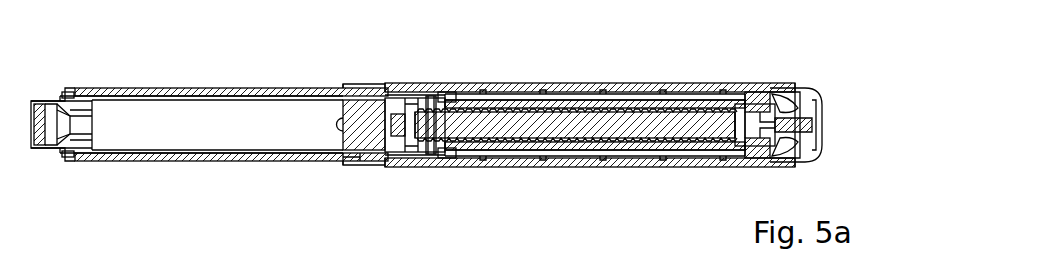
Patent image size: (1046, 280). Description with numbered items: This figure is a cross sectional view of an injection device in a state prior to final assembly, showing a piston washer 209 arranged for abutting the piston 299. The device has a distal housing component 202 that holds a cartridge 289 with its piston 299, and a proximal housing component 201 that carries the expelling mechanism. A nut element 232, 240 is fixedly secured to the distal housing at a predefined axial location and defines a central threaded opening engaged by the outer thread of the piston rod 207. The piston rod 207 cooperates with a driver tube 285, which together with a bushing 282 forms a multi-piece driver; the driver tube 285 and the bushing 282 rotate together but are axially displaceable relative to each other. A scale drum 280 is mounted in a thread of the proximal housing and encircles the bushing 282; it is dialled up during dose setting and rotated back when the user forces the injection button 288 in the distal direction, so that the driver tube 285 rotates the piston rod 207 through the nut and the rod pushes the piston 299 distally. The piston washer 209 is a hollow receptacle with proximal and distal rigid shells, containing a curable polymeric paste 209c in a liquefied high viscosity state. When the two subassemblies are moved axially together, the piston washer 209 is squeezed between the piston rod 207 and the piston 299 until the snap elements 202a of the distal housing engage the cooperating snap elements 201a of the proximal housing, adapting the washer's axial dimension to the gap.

The proximal housing component 201 is at (607, 160).
The snap elements of the proximal housing component 201a is at (357, 161).
The distal housing component 202 is at (130, 158).
The snap elements of the distal housing component 202a is at (347, 160).
The piston rod 207 is at (510, 140).
The piston washer 209 is at (412, 147).
The curable polymeric paste 209c is at (398, 136).
The nut element 232 is at (500, 100).
The nut element 240 is at (431, 96).
The scale drum 280 is at (625, 92).
The bushing 282 is at (712, 100).
The driver tube 285 is at (448, 98).
The injection button 288 is at (815, 100).
The cartridge 289 is at (246, 94).
The piston 299 is at (372, 100).